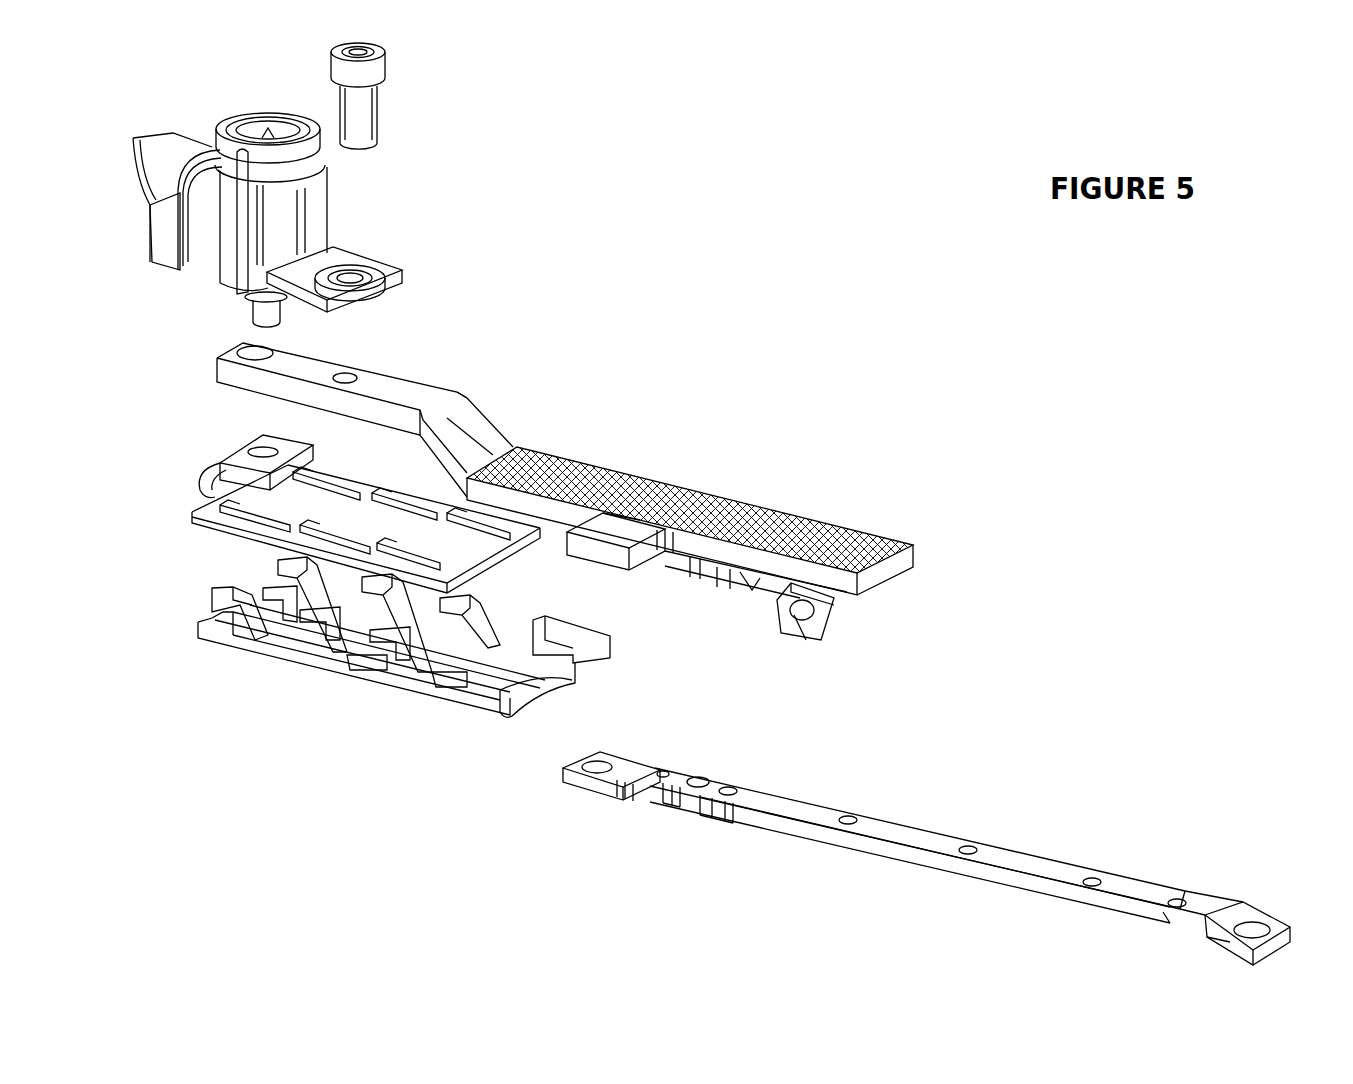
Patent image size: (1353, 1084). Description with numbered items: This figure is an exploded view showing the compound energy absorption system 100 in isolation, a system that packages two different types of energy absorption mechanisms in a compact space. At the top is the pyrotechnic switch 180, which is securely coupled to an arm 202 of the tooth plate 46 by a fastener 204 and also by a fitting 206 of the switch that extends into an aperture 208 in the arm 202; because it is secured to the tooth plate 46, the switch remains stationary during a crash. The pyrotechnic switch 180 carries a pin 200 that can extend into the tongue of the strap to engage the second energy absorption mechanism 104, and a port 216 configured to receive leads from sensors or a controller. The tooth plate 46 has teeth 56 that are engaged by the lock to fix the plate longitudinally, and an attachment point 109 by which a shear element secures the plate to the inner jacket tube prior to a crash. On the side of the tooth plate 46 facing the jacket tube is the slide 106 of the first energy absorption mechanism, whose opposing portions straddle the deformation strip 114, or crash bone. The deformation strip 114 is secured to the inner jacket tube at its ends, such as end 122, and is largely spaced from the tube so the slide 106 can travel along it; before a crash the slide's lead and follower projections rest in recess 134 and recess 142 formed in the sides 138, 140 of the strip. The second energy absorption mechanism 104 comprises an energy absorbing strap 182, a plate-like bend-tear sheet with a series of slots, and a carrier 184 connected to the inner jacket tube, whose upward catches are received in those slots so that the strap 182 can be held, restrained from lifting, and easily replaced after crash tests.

The compound energy absorption system 100 is at (770, 193).
The pyrotechnic switch 180 is at (198, 90).
The fastener 204 is at (355, 107).
The pin 200 is at (243, 308).
The port 216 is at (130, 168).
The fitting 206 is at (243, 292).
The aperture 208 is at (277, 353).
The arm 202 is at (418, 392).
The teeth 56 is at (770, 517).
The tooth plate 46 is at (922, 551).
The slide 106 is at (670, 560).
The attachment point 109 is at (776, 616).
The second energy absorption mechanism 104 is at (172, 433).
The energy absorbing strap 182 is at (514, 550).
The carrier 184 is at (562, 689).
The deformation strip 114 is at (1027, 893).
The side 140 is at (923, 828).
The recess 142 is at (672, 802).
The recess 134 is at (717, 805).
The side 138 is at (868, 842).
The end 122 is at (1279, 915).